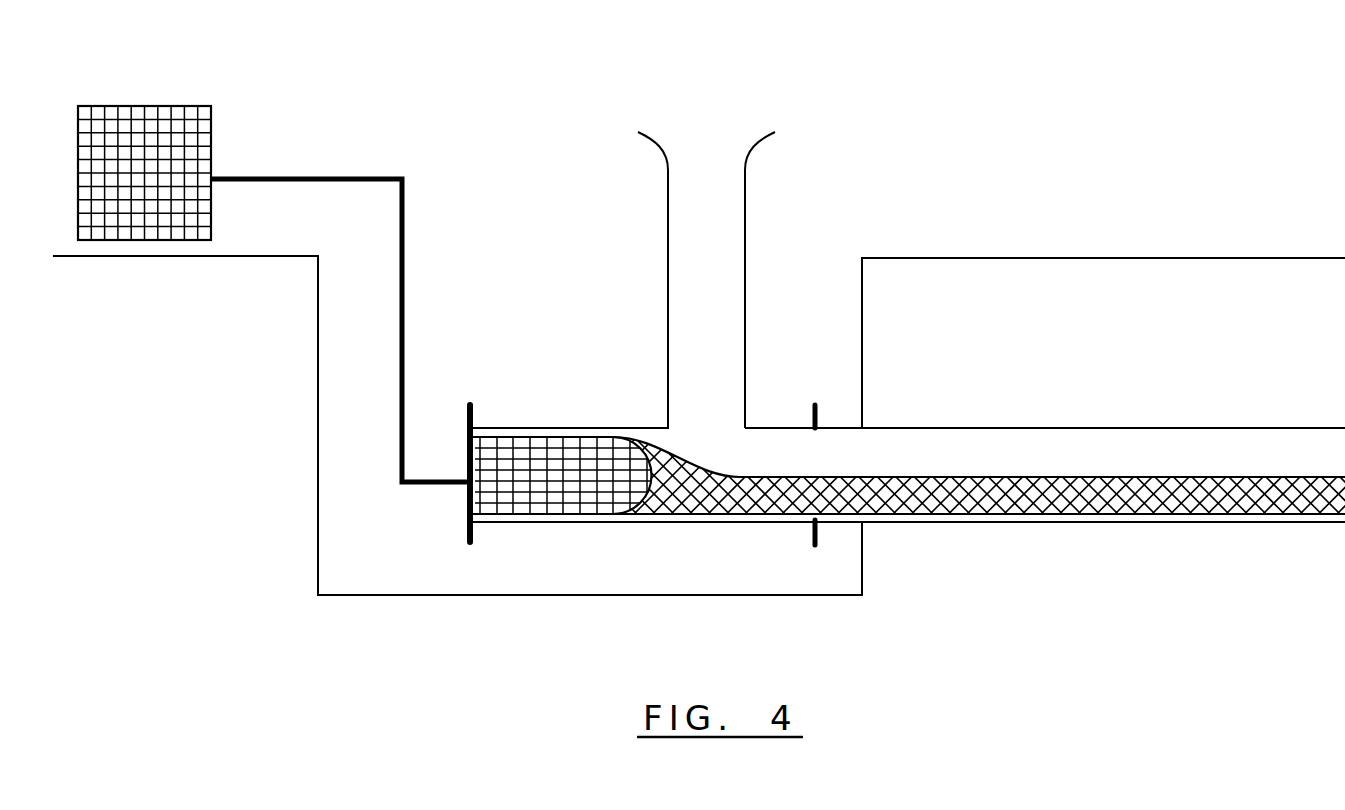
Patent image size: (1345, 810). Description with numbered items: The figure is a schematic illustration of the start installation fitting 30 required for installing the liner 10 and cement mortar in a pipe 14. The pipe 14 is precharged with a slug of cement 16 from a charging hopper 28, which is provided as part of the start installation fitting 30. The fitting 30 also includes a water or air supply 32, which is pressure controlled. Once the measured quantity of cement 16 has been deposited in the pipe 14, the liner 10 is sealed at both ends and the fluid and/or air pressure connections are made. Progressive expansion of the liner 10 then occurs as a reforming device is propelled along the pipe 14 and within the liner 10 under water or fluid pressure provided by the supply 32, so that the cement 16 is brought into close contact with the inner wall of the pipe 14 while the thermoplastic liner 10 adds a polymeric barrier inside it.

The liner 10 is at (1042, 502).
The pipe 14 is at (1157, 427).
The cement 16 is at (1003, 442).
The charging hopper 28 is at (745, 227).
The start installation fitting 30 is at (548, 140).
The water or air supply 32 is at (158, 117).